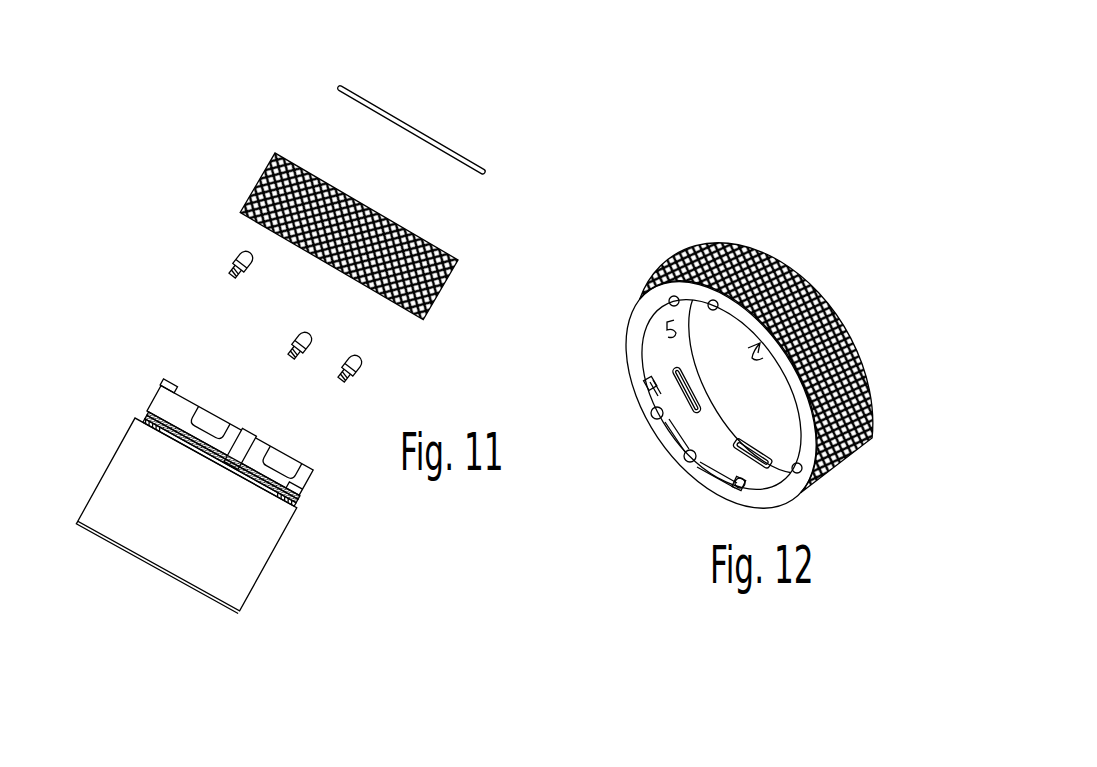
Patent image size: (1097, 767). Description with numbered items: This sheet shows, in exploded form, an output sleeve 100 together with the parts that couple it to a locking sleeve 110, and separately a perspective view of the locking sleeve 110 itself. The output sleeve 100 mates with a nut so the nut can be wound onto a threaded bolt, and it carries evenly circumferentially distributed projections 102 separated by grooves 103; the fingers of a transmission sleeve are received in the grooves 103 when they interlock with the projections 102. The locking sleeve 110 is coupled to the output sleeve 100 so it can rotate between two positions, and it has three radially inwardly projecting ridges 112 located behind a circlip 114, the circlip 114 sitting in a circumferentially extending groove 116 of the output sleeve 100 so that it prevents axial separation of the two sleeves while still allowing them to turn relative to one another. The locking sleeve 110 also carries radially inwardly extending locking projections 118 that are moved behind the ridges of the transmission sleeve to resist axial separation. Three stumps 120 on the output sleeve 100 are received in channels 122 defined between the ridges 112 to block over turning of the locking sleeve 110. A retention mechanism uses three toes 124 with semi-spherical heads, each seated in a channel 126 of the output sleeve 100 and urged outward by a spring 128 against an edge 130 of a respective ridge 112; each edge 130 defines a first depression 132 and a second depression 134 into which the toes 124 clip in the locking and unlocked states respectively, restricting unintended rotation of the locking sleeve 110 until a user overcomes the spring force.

In FIG. 11, the output sleeve 100 is at (128, 467).
In FIG. 11, the projections 102 is at (183, 403).
In FIG. 11, the grooves 103 is at (213, 420).
In FIG. 11, the locking sleeve 110 is at (460, 262).
In FIG. 12, the locking sleeve 110 is at (795, 268).
In FIG. 12, the inwardly projecting ridges 112 is at (652, 333).
In FIG. 11, the circlip 114 is at (405, 120).
In FIG. 11, the circumferentially extending groove 116 is at (200, 433).
In FIG. 12, the locking projections 118 is at (680, 385).
In FIG. 11, the stumps 120 is at (150, 410).
In FIG. 12, the channels 122 is at (650, 358).
In FIG. 11, the toes 124 is at (235, 240).
In FIG. 11, the channels 126 is at (245, 447).
In FIG. 11, the spring 128 is at (232, 270).
In FIG. 12, the edge 130 is at (713, 470).
In FIG. 12, the first depression 132 is at (650, 413).
In FIG. 12, the second depression 134 is at (688, 457).